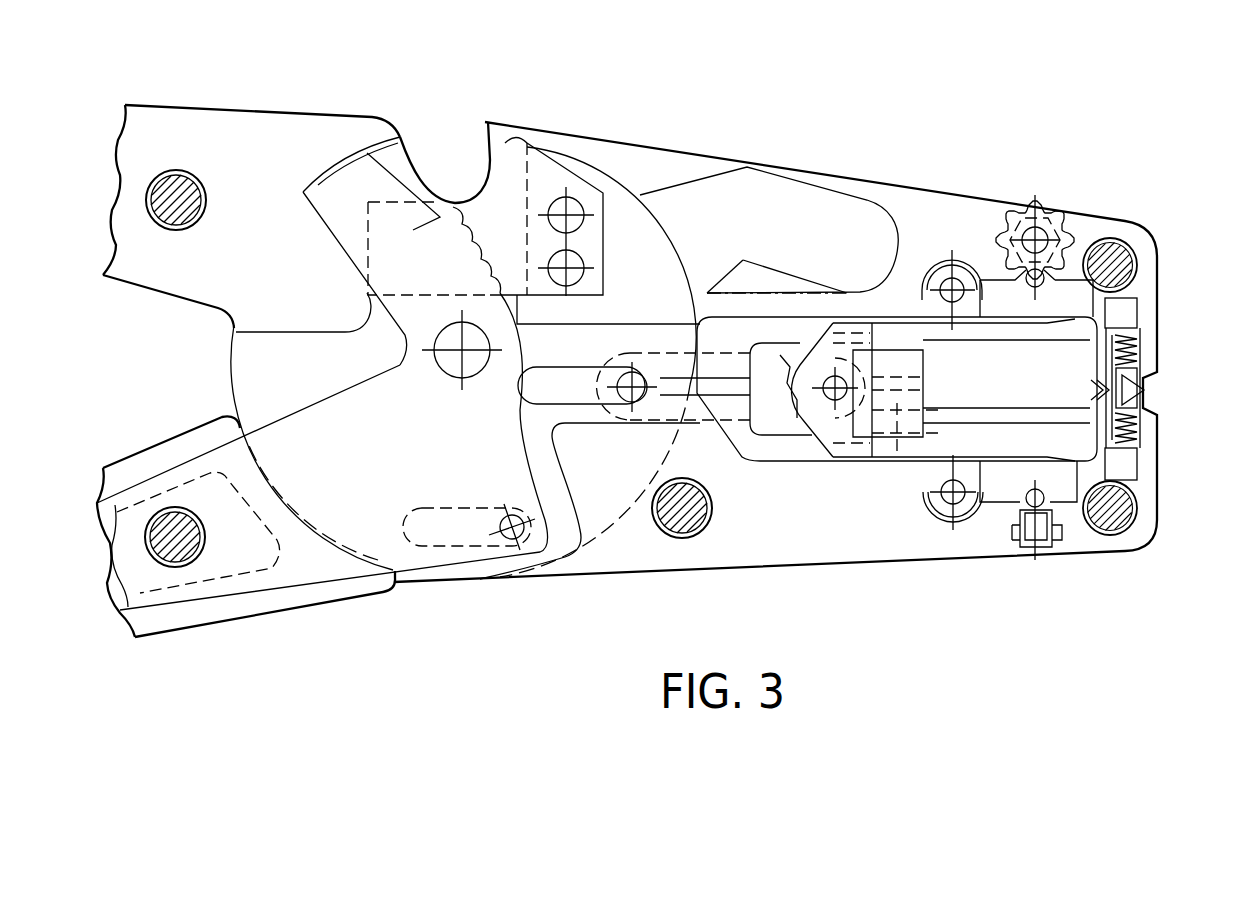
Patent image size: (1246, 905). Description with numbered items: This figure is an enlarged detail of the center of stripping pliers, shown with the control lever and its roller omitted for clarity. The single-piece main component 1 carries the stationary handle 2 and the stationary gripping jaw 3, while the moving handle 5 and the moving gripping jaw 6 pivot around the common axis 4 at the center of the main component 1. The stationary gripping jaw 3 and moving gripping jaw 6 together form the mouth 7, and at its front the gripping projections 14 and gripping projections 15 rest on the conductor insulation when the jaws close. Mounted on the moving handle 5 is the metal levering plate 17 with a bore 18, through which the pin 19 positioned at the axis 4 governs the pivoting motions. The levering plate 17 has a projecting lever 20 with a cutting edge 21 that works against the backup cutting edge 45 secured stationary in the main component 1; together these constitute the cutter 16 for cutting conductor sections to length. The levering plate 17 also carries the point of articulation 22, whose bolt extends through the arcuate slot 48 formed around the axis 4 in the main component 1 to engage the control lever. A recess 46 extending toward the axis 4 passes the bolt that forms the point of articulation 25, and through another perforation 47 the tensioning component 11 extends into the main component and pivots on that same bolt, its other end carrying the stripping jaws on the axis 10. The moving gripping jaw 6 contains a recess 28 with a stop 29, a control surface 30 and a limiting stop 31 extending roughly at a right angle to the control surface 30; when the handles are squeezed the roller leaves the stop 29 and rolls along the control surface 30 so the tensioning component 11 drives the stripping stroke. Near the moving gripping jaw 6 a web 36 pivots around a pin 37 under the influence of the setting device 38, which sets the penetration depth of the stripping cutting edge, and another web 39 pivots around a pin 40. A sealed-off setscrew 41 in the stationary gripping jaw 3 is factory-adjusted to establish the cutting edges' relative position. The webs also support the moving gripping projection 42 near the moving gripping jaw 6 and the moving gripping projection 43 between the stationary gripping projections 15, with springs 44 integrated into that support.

The main component 1 is at (645, 585).
The stationary handle 2 is at (213, 118).
The stationary gripping jaw 3 is at (745, 548).
The common axis 4 is at (460, 379).
The moving handle 5 is at (306, 592).
The moving gripping jaw 6 is at (937, 212).
The mouth 7 is at (1163, 400).
The axis 10 is at (840, 397).
The tensioning component 11 is at (817, 410).
The gripping projections 14 is at (1140, 325).
The gripping projections 15 is at (1130, 455).
The cutter 16 is at (449, 138).
The levering plate 17 is at (373, 537).
The bore 18 is at (435, 348).
The pin 19 is at (445, 362).
The projecting lever 20 is at (337, 183).
The cutting edge 21 is at (397, 163).
The point of articulation 22 is at (512, 515).
The point of articulation 25 is at (632, 372).
The recess 28 is at (835, 187).
The stop 29 is at (848, 292).
The control surface 30 is at (775, 263).
The limiting stop 31 is at (730, 267).
The web 36 is at (1067, 290).
The pin 37 is at (958, 287).
The setting device 38 is at (1035, 188).
The web 39 is at (1000, 487).
The pin 40 is at (945, 502).
The setscrew 41 is at (1040, 533).
The moving gripping projection 42 is at (1145, 385).
The moving gripping projection 43 is at (1140, 400).
The springs 44 is at (1140, 347).
The backup cutting edge 45 is at (512, 150).
The recess 46 is at (595, 367).
The perforation 47 is at (678, 334).
The slot 48 is at (452, 548).